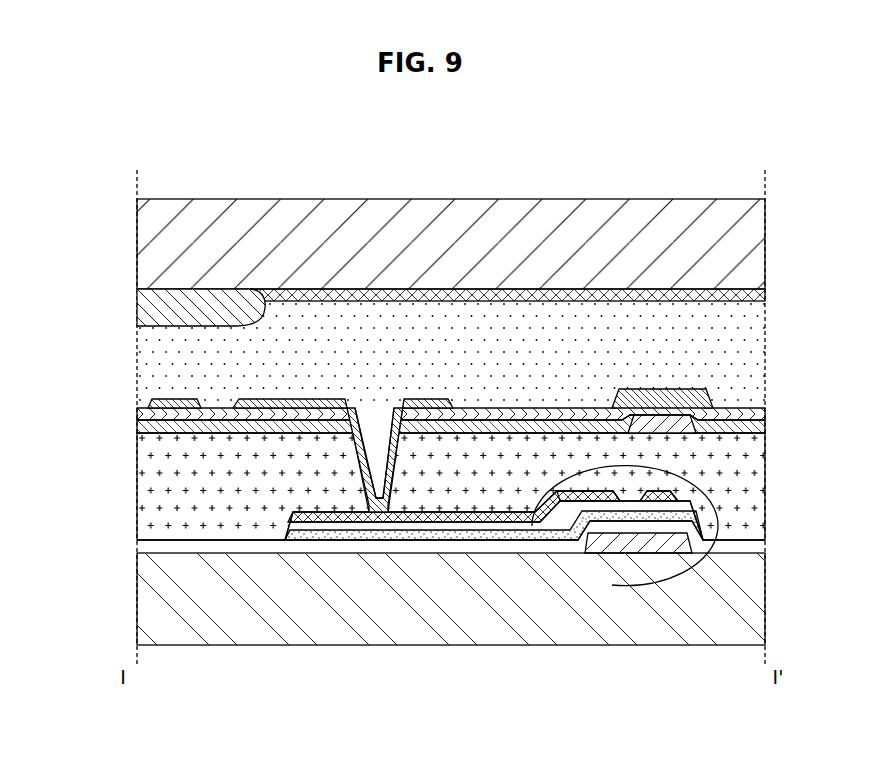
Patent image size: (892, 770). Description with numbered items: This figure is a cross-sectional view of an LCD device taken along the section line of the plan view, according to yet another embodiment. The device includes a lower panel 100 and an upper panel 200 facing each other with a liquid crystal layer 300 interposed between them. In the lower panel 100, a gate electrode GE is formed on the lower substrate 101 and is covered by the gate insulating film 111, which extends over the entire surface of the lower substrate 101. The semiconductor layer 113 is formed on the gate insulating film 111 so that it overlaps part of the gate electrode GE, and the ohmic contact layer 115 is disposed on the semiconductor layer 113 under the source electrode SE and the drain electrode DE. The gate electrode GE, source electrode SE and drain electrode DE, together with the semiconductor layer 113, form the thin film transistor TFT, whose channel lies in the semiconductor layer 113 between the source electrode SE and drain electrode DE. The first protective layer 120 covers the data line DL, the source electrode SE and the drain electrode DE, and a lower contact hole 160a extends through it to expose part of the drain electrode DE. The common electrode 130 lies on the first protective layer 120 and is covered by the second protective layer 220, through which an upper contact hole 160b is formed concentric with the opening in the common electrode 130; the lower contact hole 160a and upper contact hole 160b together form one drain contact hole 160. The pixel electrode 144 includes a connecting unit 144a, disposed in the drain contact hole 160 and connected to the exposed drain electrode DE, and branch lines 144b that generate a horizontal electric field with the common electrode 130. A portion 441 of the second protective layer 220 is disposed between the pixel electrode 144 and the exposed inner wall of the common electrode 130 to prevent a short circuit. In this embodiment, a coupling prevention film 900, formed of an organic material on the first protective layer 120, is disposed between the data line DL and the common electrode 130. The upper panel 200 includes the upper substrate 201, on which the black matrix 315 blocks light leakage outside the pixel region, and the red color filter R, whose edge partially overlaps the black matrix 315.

The lower panel 100 is at (422, 450).
The lower substrate 101 is at (152, 597).
The gate insulating film 111 is at (278, 547).
The semiconductor layer 113 is at (458, 538).
The ohmic contact layer 115 is at (487, 523).
The first protective layer 120 is at (153, 488).
The common electrode 130 is at (145, 431).
The pixel electrode 144 is at (362, 427).
The connecting unit 144a is at (247, 399).
The branch lines 144b is at (182, 399).
The drain contact hole 160 is at (356, 576).
The lower contact hole 160a is at (378, 409).
The upper contact hole 160b is at (378, 470).
The upper panel 200 is at (449, 227).
The upper substrate 201 is at (153, 253).
The second protective layer 220 is at (585, 413).
The liquid crystal layer 300 is at (483, 281).
The black matrix 315 is at (652, 296).
The portion of the second protective layer 441 is at (415, 504).
The coupling prevention film 900 is at (662, 405).
The drain electrode DE is at (512, 523).
The source electrode SE is at (644, 497).
The data line DL is at (668, 505).
The gate electrode GE is at (625, 547).
The thin film transistor TFT is at (612, 586).
The red color filter R is at (201, 307).